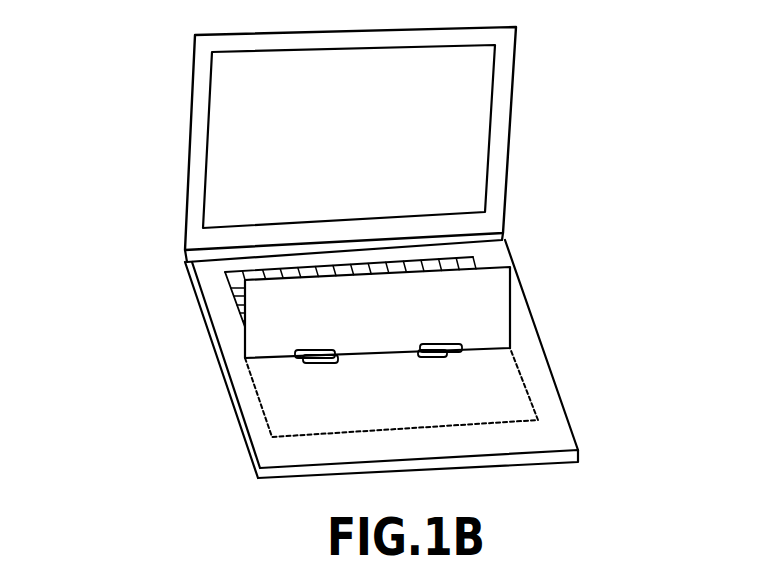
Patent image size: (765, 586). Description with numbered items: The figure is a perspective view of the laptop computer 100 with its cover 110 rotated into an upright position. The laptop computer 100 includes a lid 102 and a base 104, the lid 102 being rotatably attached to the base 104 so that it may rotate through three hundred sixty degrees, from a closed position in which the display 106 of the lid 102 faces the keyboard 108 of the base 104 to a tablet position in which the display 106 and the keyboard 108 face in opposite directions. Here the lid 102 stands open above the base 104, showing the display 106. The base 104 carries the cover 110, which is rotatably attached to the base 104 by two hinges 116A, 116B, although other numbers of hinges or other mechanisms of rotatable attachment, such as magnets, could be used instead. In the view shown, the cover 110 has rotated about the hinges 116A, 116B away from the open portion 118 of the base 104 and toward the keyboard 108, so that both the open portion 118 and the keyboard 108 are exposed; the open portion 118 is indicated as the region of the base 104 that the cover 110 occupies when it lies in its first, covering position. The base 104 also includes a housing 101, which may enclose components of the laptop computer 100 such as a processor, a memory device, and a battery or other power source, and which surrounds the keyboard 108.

The laptop computer 100 is at (354, 254).
The housing 101 is at (382, 254).
The lid 102 is at (397, 144).
The base 104 is at (352, 361).
The display 106 is at (349, 136).
The keyboard 108 is at (232, 293).
The cover 110 is at (512, 277).
The hinge 116A is at (317, 364).
The hinge 116B is at (443, 356).
The open portion 118 is at (391, 392).